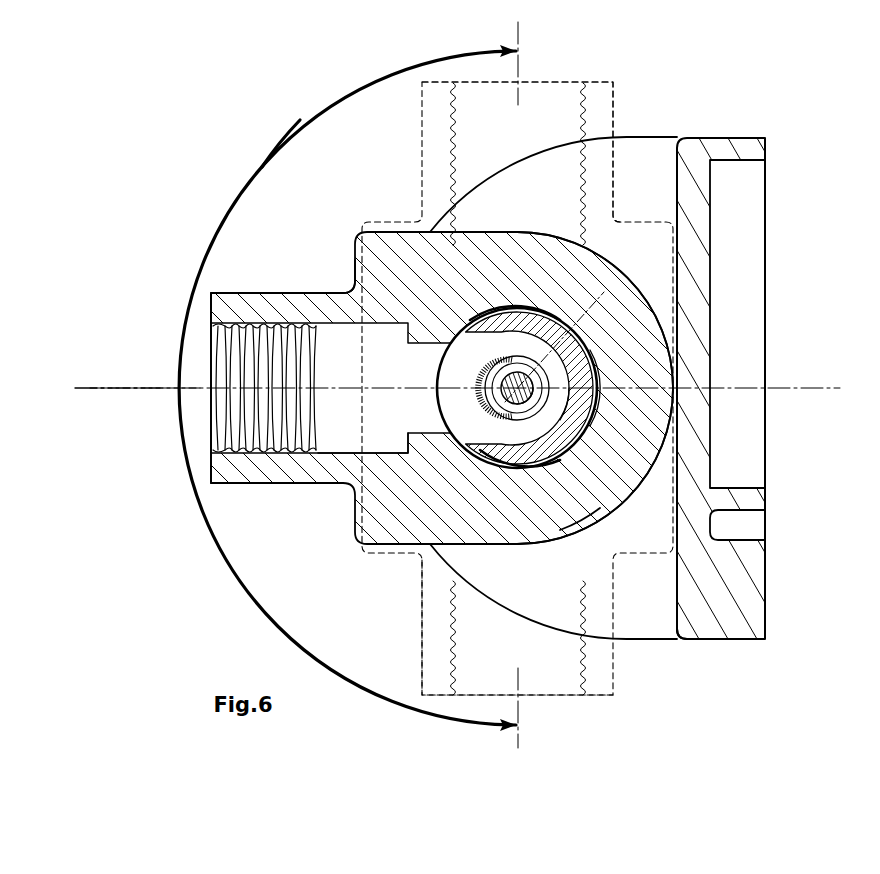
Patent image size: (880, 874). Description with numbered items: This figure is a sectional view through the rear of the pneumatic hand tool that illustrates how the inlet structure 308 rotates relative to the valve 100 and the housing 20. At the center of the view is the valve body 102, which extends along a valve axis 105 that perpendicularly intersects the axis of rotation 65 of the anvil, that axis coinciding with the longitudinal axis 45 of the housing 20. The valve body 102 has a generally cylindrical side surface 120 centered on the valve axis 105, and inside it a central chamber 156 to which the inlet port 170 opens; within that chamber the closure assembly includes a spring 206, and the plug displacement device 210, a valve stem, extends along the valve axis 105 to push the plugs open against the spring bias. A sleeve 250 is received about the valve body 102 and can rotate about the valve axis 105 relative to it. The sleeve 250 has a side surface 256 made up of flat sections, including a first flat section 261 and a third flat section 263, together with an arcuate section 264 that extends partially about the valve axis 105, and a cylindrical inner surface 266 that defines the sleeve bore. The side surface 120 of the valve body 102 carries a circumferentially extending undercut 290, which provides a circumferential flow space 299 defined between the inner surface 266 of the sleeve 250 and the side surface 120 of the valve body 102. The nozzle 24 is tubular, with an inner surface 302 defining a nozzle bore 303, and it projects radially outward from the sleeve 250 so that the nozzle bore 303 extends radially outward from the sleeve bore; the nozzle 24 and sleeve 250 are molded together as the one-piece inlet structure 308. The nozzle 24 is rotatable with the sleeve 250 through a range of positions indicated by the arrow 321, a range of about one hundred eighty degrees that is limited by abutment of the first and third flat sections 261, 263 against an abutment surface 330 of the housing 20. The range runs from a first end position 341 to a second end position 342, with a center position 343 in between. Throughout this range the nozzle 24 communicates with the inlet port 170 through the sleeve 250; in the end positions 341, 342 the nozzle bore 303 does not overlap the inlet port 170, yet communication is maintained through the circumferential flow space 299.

The housing 20 is at (735, 130).
The nozzle 24 is at (262, 293).
The longitudinal axis 45 is at (108, 388).
The axis of rotation 65 is at (82, 358).
The valve 100 is at (547, 300).
The valve body 102 is at (555, 335).
The valve axis 105 is at (552, 348).
The side surface 120 is at (574, 342).
The central chamber 156 is at (578, 361).
The inlet port 170 is at (436, 362).
The spring 206 is at (551, 385).
The plug displacement device 210 is at (534, 402).
The sleeve 250 is at (371, 228).
The side surface 256 is at (618, 278).
The first flat section 261 is at (481, 232).
The third flat section 263 is at (487, 545).
The arcuate section 264 is at (611, 508).
The cylindrical inner surface 266 is at (575, 418).
The undercut 290 is at (577, 441).
The circumferential flow space 299 is at (559, 476).
The inner surface 302 is at (331, 449).
The nozzle bore 303 is at (331, 388).
The inlet structure 308 is at (212, 224).
The arrow 321 is at (263, 167).
The abutment surface 330 is at (677, 568).
The first end position 341 is at (422, 118).
The second end position 342 is at (422, 603).
The center position 343 is at (288, 293).